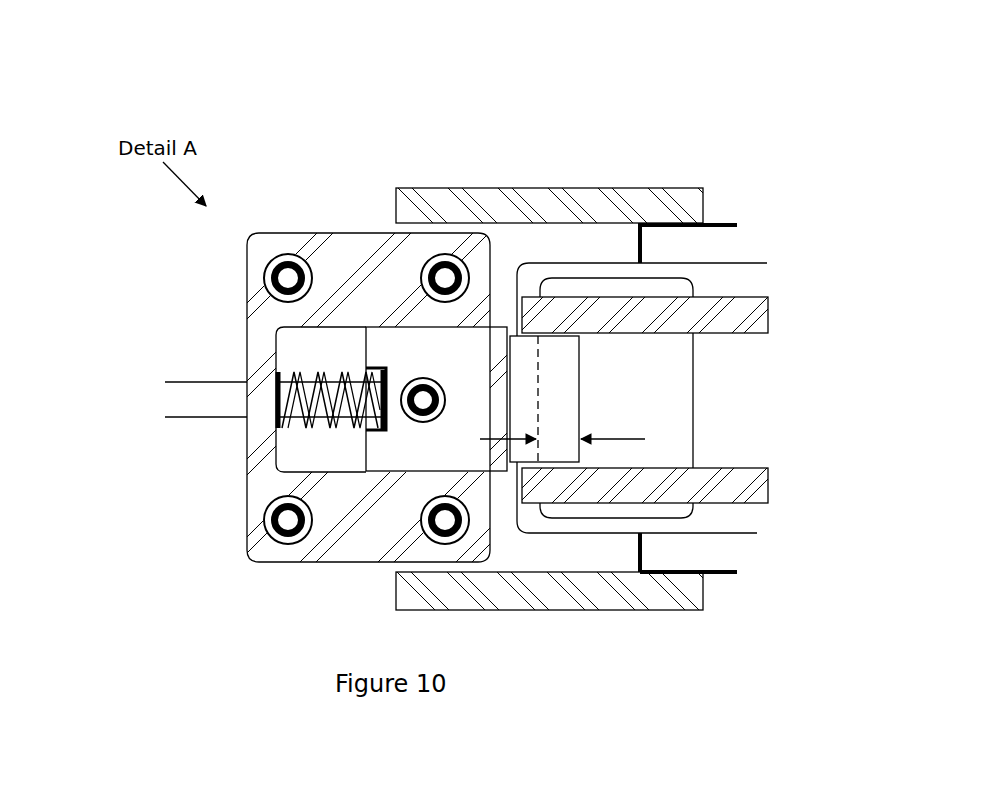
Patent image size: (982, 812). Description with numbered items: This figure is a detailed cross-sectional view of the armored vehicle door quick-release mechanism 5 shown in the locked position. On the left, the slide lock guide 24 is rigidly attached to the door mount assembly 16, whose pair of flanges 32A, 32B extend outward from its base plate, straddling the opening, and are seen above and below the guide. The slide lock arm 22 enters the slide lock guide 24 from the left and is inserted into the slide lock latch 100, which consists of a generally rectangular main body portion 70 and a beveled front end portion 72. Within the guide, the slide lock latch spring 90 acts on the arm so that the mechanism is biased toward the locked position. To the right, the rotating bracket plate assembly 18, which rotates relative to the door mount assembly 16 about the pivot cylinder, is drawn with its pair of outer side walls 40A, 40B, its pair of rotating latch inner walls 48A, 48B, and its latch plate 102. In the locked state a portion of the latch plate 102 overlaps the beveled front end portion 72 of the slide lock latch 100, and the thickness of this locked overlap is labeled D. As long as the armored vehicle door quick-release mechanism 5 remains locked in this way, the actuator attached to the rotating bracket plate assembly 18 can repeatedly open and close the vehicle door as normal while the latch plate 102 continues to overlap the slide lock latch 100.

The armored vehicle door quick-release mechanism 5 is at (372, 135).
The door mount assembly 16 is at (443, 200).
The rotating bracket plate assembly 18 is at (718, 248).
The slide lock arm 22 is at (210, 392).
The slide lock guide 24 is at (345, 260).
The flange 32A is at (473, 195).
The flange 32B is at (508, 590).
The outer side wall 40A is at (738, 242).
The outer side wall 40B is at (672, 550).
The rotating latch inner wall 48A is at (737, 317).
The rotating latch inner wall 48B is at (720, 488).
The main body portion 70 is at (447, 365).
The beveled front end portion 72 is at (532, 383).
The slide lock latch spring 90 is at (313, 423).
The slide lock latch 100 is at (482, 373).
The latch plate 102 is at (620, 402).